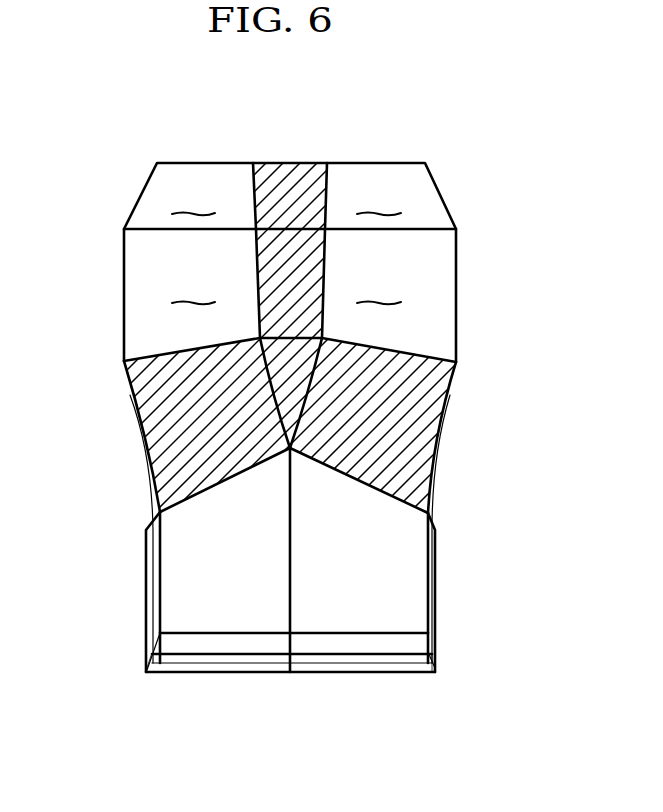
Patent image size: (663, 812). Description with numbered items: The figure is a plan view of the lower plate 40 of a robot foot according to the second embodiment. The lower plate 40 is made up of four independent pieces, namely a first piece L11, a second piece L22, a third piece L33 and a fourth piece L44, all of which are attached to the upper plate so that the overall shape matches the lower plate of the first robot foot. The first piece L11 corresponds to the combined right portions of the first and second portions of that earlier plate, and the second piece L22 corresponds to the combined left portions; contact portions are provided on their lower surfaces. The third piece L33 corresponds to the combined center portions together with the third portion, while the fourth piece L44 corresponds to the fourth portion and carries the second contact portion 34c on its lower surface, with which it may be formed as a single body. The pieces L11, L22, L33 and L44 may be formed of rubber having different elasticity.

The lower plate 40 is at (493, 198).
The second contact portion 34c is at (238, 673).
The first piece L11 is at (193, 241).
The second piece L22 is at (380, 241).
The third piece L33 is at (108, 365).
The fourth piece L44 is at (108, 512).